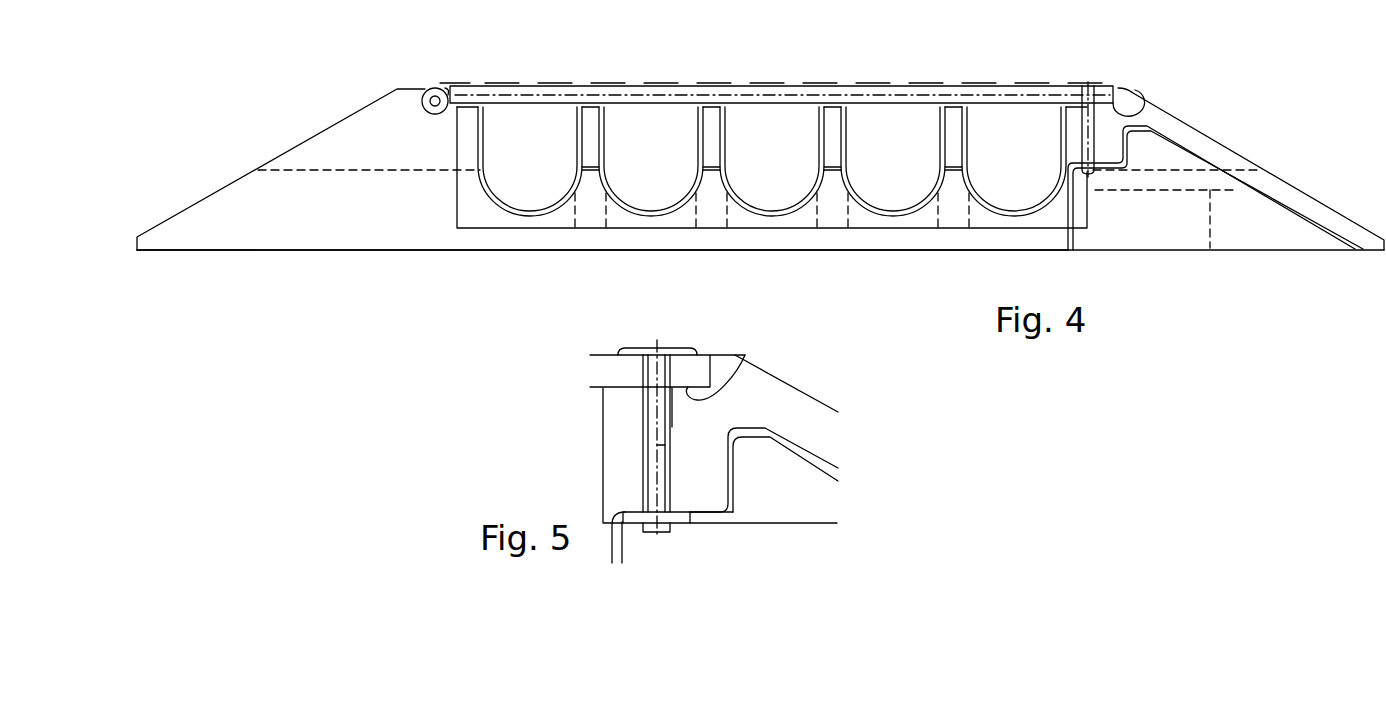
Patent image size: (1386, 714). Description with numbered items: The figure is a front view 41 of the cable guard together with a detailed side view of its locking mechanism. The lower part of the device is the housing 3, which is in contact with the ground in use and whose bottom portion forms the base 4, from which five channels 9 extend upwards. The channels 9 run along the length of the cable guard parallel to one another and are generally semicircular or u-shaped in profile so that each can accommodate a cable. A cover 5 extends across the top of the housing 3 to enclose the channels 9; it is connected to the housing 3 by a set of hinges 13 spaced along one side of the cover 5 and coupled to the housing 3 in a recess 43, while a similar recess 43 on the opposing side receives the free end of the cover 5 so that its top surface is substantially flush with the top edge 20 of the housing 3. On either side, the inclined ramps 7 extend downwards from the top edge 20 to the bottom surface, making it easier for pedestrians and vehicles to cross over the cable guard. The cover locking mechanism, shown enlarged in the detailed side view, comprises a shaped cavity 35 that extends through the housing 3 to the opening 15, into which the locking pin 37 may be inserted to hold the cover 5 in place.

In FIG. 4, the housing 3 is at (480, 217).
In FIG. 5, the housing 3 is at (614, 467).
In FIG. 4, the base 4 is at (887, 235).
In FIG. 4, the cover 5 is at (1010, 94).
In FIG. 5, the cover 5 is at (613, 367).
In FIG. 4, the ramp 7 is at (318, 132).
In FIG. 5, the ramp 7 is at (786, 383).
In FIG. 4, the channel 9 is at (522, 171).
In FIG. 4, the hinge 13 is at (433, 90).
In FIG. 5, the opening 15 is at (748, 494).
In FIG. 4, the top edge 20 is at (415, 88).
In FIG. 4, the shaped cavity 35 is at (1215, 188).
In FIG. 5, the shaped cavity 35 is at (672, 427).
In FIG. 4, the locking pin 37 is at (1088, 129).
In FIG. 5, the locking pin 37 is at (662, 350).
In FIG. 4, the front view 41 is at (140, 153).
In FIG. 4, the recess 43 is at (1112, 110).
In FIG. 5, the recess 43 is at (710, 392).